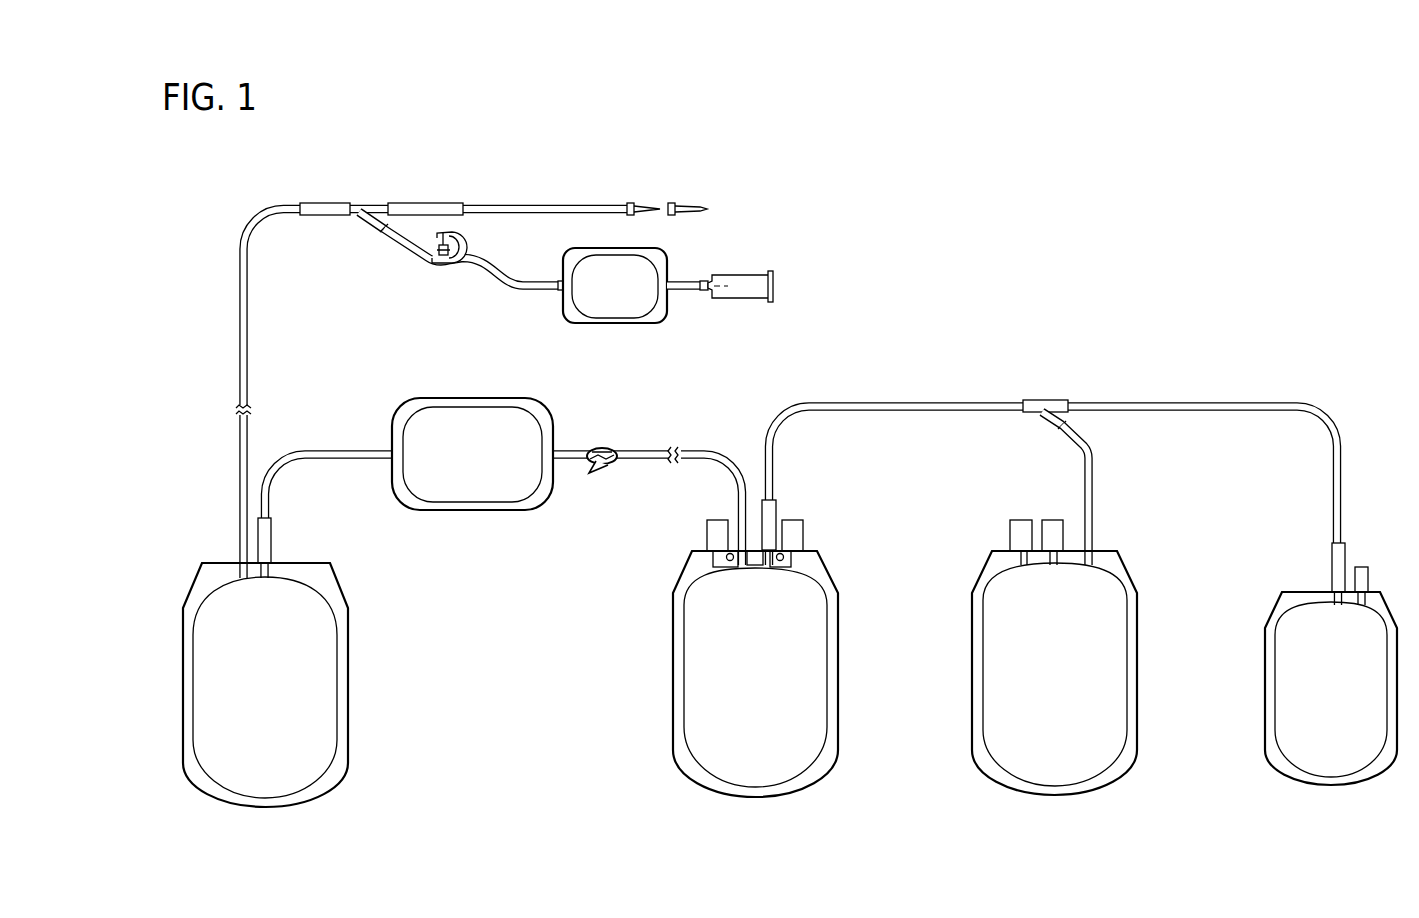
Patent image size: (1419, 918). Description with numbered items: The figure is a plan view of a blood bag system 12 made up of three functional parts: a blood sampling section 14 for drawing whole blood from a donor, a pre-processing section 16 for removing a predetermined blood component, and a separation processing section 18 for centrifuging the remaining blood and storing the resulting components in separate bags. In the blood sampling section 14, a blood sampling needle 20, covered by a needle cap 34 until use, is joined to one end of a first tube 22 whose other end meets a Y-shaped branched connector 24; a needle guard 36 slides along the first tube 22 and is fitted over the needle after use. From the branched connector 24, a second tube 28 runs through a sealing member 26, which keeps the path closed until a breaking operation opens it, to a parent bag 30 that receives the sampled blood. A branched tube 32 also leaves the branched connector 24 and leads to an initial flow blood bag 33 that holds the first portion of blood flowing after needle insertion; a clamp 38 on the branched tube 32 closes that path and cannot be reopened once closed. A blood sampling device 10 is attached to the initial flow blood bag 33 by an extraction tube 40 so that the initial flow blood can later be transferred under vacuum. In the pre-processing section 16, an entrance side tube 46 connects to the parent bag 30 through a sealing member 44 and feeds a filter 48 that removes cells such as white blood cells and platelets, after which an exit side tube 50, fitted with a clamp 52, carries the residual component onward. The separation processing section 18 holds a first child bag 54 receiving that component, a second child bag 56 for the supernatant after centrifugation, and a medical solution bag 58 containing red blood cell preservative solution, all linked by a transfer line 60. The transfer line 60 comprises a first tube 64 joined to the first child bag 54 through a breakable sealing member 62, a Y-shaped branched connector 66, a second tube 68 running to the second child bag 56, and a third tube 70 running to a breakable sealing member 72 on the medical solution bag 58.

The blood sampling device 10 is at (740, 300).
The blood bag system 12 is at (831, 172).
The blood sampling section 14 is at (192, 380).
The pre-processing section 16 is at (474, 535).
The separation processing section 18 is at (1101, 326).
The blood sampling needle 20 is at (643, 207).
The first tube 22 is at (553, 206).
The Y-shaped branched connector 24 is at (370, 205).
The sealing member 26 is at (313, 204).
The second tube 28 is at (240, 251).
The parent bag 30 is at (268, 788).
The branched tube 32 is at (501, 272).
The initial flow blood bag 33 is at (615, 322).
The needle cap 34 is at (700, 206).
The needle guard 36 is at (437, 204).
The clamp 38 is at (442, 265).
The extraction tube 40 is at (690, 290).
The sealing member 44 is at (268, 540).
The entrance side tube 46 is at (330, 450).
The filter 48 is at (510, 490).
The exit side tube 50 is at (720, 451).
The clamp 52 is at (608, 468).
The first child bag 54 is at (757, 775).
The second child bag 56 is at (1057, 775).
The medical solution bag 58 is at (1329, 765).
The transfer line 60 is at (1154, 400).
The breakable sealing member 62 is at (778, 506).
The first tube 64 is at (818, 411).
The Y-shaped branched connector 66 is at (1048, 398).
The second tube 68 is at (1093, 485).
The third tube 70 is at (1342, 523).
The breakable sealing member 72 is at (1340, 567).